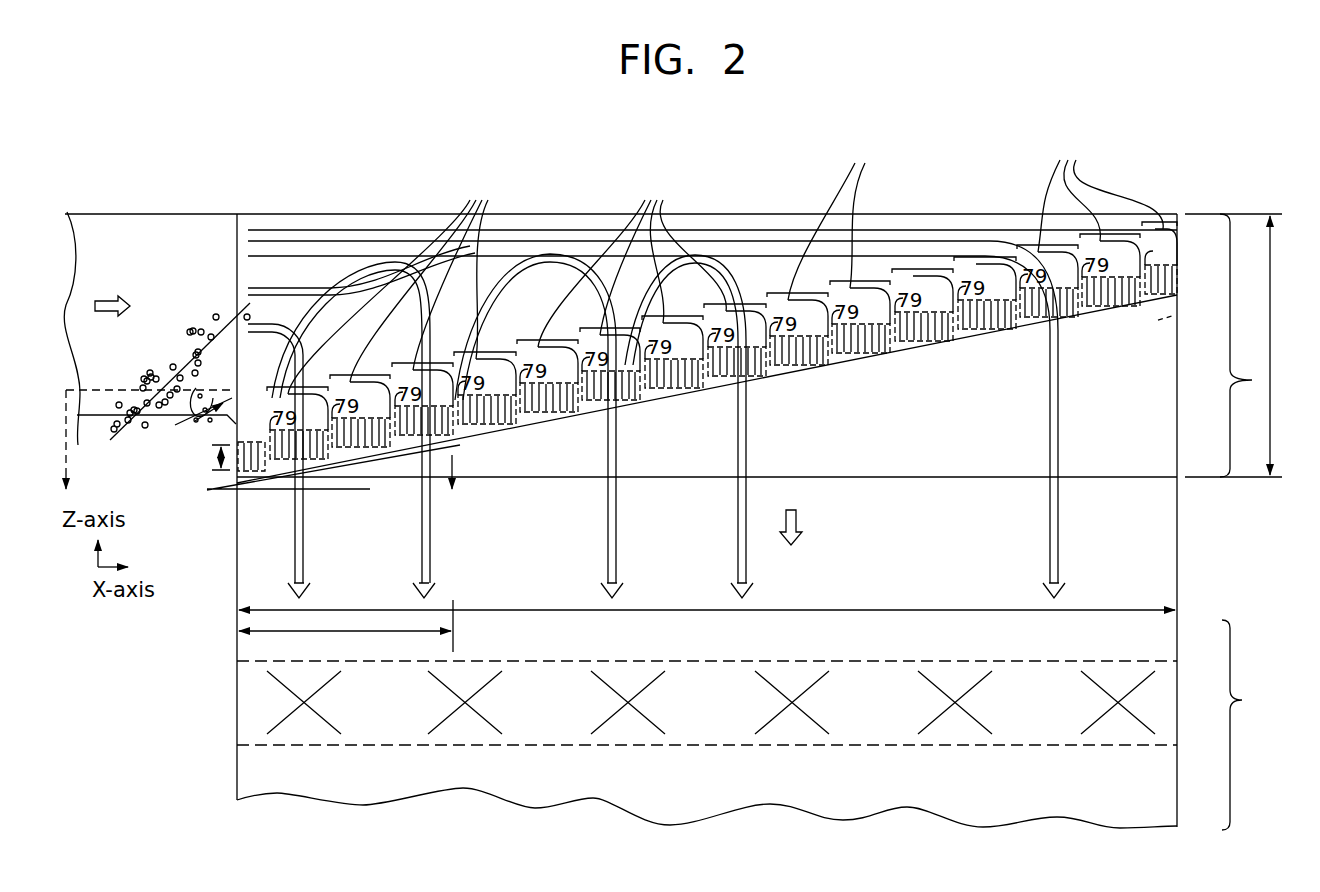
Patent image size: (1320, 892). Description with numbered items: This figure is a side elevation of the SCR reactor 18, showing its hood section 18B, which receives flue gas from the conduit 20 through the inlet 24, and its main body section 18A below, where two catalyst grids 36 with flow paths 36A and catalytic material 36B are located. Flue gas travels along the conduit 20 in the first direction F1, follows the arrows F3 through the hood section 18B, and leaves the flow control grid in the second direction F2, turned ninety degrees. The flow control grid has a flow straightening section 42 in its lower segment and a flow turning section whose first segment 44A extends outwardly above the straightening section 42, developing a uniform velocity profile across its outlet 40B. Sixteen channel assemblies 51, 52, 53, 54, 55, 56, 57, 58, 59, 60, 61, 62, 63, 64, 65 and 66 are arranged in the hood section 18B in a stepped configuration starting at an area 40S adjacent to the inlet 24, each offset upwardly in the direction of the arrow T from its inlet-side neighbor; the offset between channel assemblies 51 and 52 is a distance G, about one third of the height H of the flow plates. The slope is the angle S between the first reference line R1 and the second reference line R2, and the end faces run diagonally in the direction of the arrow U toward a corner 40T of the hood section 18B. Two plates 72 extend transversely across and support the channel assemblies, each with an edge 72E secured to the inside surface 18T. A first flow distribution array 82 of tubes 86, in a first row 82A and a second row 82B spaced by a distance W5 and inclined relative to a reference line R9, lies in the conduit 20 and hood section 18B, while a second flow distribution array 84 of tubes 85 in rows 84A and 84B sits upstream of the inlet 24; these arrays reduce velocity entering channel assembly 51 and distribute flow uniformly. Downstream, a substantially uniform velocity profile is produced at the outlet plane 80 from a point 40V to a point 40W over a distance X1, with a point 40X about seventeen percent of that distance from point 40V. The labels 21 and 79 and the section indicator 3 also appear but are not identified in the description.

The SCR reactor 18 is at (988, 213).
The main body section 18A is at (1258, 725).
The hood section 18B is at (1247, 345).
The inside surface 18T is at (272, 216).
The conduit 20 is at (117, 246).
The height dimension 21 is at (1266, 294).
The inlet 24 is at (221, 241).
The catalyst grids 36 is at (1156, 712).
The flow paths 36A is at (388, 710).
The catalytic material 36B is at (662, 721).
The outlet of the flow control grid 40B is at (907, 528).
The area 40S is at (225, 506).
The corner 40T is at (1188, 192).
The point 40V is at (244, 502).
The point 40W is at (1170, 314).
The point 40X is at (456, 606).
The flow straightening section 42 is at (252, 471).
The first segment 44A is at (725, 262).
The channel assembly 51 is at (252, 399).
The channel assembly 52 is at (299, 387).
The channel assembly 53 is at (362, 375).
The channel assembly 54 is at (424, 363).
The channel assembly 55 is at (486, 352).
The channel assembly 56 is at (549, 340).
The channel assembly 57 is at (612, 328).
The channel assembly 58 is at (674, 316).
The channel assembly 59 is at (736, 304).
The channel assembly 60 is at (799, 293).
The channel assembly 61 is at (862, 281).
The channel assembly 62 is at (924, 269).
The channel assembly 63 is at (986, 257).
The channel assembly 64 is at (1049, 245).
The channel assembly 65 is at (1112, 234).
The channel assembly 66 is at (1161, 222).
The plates 72 is at (400, 240).
The edge 72E is at (252, 231).
The ejector hood 79 is at (997, 262).
The outlet plane 80 is at (279, 444).
The first flow distribution array 82 is at (146, 352).
The first row 82A is at (230, 300).
The second row 82B is at (258, 321).
The second flow distribution array 84 is at (190, 413).
The row 84A is at (232, 396).
The row 84B is at (240, 402).
The tubes 85 is at (205, 392).
The tubes 86 is at (200, 334).
The first direction F1 is at (72, 306).
The second direction F2 is at (800, 526).
The arrows F3 is at (1043, 594).
The distance G is at (235, 431).
The height H is at (221, 469).
The first reference line R1 is at (413, 463).
The second reference line R2 is at (345, 496).
The reference line R9 is at (99, 417).
The angle S is at (357, 477).
The arrow T is at (697, 505).
The arrow U is at (893, 406).
The distance W5 is at (226, 300).
The distance X1 is at (800, 610).
The section line 3- 3 is at (258, 444).